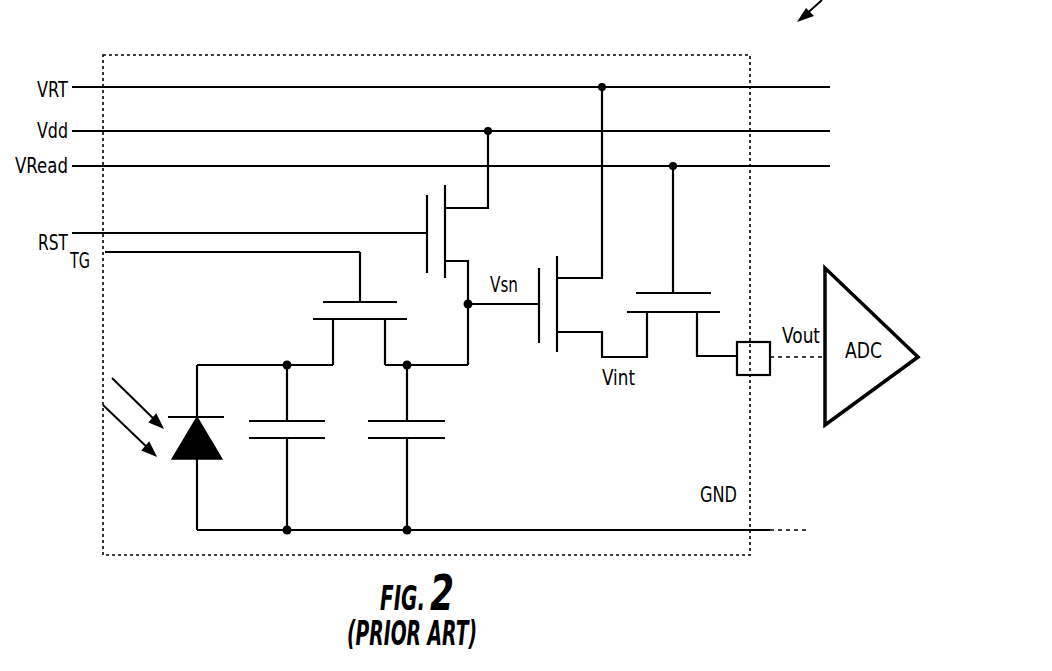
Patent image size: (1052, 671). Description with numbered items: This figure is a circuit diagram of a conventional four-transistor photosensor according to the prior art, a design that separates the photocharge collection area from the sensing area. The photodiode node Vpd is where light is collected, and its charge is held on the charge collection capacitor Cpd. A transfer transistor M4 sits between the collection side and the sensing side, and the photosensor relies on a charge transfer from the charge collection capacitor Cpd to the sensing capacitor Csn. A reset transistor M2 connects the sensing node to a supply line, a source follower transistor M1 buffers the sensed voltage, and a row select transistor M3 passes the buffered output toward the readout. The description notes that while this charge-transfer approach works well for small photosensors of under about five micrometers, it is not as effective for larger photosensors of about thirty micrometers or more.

The source follower transistor M1 is at (593, 222).
The reset transistor M2 is at (432, 248).
The row select transistor M3 is at (682, 261).
The transfer gate transistor M4 is at (339, 333).
The photodiode Vpd is at (163, 428).
The charge collection capacitor Cpd is at (295, 447).
The sensing capacitor Csn is at (417, 447).